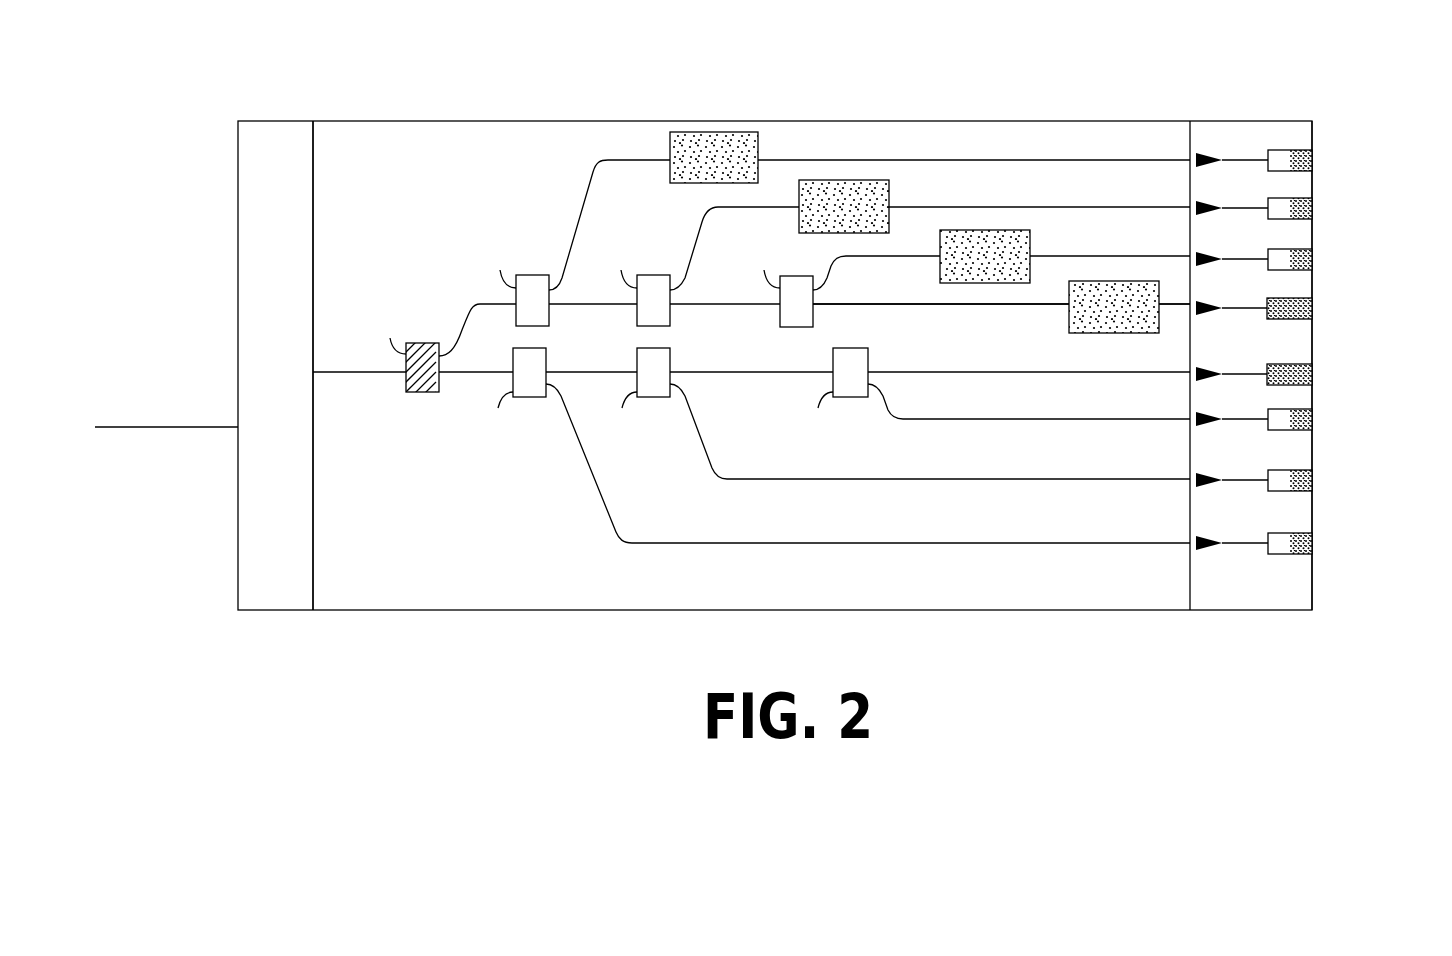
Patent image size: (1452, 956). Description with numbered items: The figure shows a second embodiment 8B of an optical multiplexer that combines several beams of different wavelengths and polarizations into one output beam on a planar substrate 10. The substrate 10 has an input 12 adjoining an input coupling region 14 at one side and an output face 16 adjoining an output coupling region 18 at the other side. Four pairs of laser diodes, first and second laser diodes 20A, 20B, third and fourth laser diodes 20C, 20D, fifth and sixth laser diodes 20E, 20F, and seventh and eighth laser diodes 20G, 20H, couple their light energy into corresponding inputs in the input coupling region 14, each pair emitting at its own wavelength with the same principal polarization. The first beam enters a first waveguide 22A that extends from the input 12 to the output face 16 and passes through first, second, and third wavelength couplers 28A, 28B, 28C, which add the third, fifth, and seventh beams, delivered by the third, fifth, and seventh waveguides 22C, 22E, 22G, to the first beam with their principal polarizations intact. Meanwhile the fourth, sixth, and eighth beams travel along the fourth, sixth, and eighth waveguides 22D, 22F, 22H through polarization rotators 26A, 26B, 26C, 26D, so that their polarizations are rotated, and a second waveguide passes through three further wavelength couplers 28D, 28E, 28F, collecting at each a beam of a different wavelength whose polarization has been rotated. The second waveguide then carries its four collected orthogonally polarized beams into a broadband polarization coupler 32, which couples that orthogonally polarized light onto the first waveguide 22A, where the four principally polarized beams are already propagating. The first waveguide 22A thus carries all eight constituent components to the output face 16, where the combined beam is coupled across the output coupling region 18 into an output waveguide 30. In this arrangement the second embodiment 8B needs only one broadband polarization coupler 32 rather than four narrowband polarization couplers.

The second embodiment 8B is at (1097, 52).
The planar substrate 10 is at (448, 121).
The input 12 is at (1190, 614).
The input coupling region 14 is at (1280, 600).
The output face 16 is at (312, 535).
The output coupling region 18 is at (296, 205).
The first laser diode 20A is at (1312, 374).
The second laser diode 20B is at (1312, 308).
The third laser diode 20C is at (1312, 419).
The fourth laser diode 20D is at (1312, 259).
The fifth laser diode 20E is at (1312, 480).
The sixth laser diode 20F is at (1312, 208).
The seventh laser diode 20G is at (1312, 543).
The eighth laser diode 20H is at (1312, 160).
The first waveguide 22A is at (1062, 373).
The third waveguide 22C is at (1063, 419).
The fourth waveguide 22D is at (1050, 256).
The fifth waveguide 22E is at (1050, 479).
The sixth waveguide 22F is at (1050, 207).
The seventh waveguide 22G is at (930, 543).
The eighth waveguide 22H is at (1015, 160).
The polarization rotator 26A is at (1115, 333).
The polarization rotator 26B is at (940, 263).
The third polarization rotator 26C is at (848, 180).
The fourth polarization rotator 26D is at (716, 132).
The first wavelength coupler 28A is at (850, 397).
The second wavelength coupler 28B is at (653, 397).
The third wavelength coupler 28C is at (528, 397).
The wavelength coupler 28D is at (797, 327).
The wavelength coupler 28E is at (652, 275).
The wavelength coupler 28F is at (532, 275).
The output waveguide 30 is at (170, 427).
The broadband polarization coupler 32 is at (421, 392).